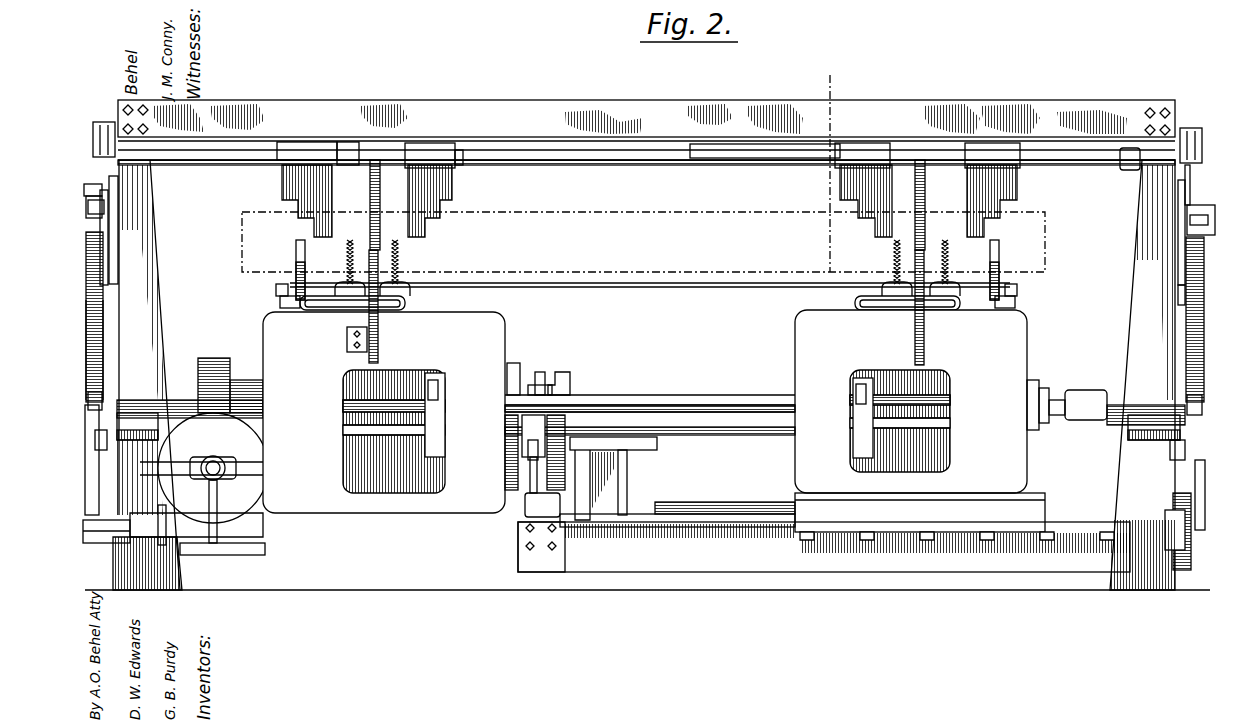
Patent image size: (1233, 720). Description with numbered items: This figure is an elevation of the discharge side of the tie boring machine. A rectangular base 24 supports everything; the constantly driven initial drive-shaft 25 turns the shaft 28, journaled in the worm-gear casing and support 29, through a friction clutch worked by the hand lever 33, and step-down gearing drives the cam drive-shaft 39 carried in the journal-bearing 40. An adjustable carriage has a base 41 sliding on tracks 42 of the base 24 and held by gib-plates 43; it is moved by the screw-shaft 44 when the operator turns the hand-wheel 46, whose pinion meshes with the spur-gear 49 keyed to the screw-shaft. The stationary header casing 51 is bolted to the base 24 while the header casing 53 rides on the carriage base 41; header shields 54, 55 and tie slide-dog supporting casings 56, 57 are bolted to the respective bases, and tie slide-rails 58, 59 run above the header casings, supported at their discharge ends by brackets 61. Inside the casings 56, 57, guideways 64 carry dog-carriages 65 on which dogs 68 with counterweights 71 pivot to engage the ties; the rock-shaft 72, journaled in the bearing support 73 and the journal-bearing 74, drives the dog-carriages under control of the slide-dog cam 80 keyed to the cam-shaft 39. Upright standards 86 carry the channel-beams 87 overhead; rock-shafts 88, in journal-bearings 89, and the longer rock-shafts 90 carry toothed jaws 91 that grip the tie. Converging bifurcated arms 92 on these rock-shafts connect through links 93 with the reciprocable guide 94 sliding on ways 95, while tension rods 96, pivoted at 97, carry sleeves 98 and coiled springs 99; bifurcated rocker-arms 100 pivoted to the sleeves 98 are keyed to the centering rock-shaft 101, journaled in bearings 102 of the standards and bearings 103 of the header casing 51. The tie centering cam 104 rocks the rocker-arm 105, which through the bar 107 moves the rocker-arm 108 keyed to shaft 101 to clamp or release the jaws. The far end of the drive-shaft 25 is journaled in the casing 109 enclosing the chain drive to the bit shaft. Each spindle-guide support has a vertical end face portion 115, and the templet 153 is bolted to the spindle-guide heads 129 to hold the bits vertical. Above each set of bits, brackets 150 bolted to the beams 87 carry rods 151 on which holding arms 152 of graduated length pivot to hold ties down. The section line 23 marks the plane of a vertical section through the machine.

The section line 23— 23 is at (832, 80).
The rectangular base 24 is at (668, 565).
The initial drive-shaft 25 is at (103, 539).
The shaft 28 is at (220, 473).
The worm-gear casing and support 29 is at (221, 552).
The hand lever 33 is at (97, 460).
The cam drive-shaft 39 is at (657, 443).
The journal-bearing 40 is at (625, 465).
The carriage base 41 is at (930, 523).
The tracks 42 is at (737, 545).
The gib-plates 43 is at (930, 569).
The screw-shaft 44 is at (750, 500).
The hand-wheel 46 is at (1189, 515).
The spur-gear 49 is at (1191, 546).
The stationary header casing 51 is at (357, 455).
The header casing 53 is at (938, 448).
The header shield 54 is at (470, 345).
The header shield 55 is at (911, 401).
The tie slide-dog supporting casing 56 is at (384, 412).
The tie slide-dog supporting casing 57 is at (1012, 343).
The tie slide-rail 58 is at (380, 330).
The tie slide-rail 59 is at (924, 345).
The brackets 61 is at (347, 343).
The guideways 64 is at (280, 302).
The dog-carriages 65 is at (278, 292).
The dog 68 is at (296, 258).
The counterweights 71 is at (1044, 385).
The rock-shaft 72 is at (702, 400).
The bearing support 73 is at (1083, 390).
The journal-bearing 74 is at (256, 392).
The slide-dog cam 80 is at (517, 367).
The upright standards 86 is at (164, 287).
The channel-beams 87 is at (646, 118).
The rock-shafts 88 is at (236, 160).
The journal-bearings 89 is at (355, 143).
The rock-shafts 90 is at (788, 158).
The jaws 91 is at (372, 202).
The converging bifurcated arms 92 is at (1205, 123).
The links 93 is at (1200, 177).
The reciprocable guide 94 is at (112, 198).
The ways 95 is at (106, 262).
The tension rods 96 is at (102, 310).
The pivotal connection 97 is at (100, 216).
The sleeves 98 is at (102, 398).
The coiled springs 99 is at (102, 335).
The bifurcated rocker-arms 100 is at (105, 450).
The centering rock-shaft 101 is at (740, 440).
The bearings 102 is at (138, 418).
The bearings 103 is at (445, 430).
The tie centering cam 104 is at (570, 374).
The rocker-arm 105 is at (530, 485).
The bar 107 is at (540, 375).
The rocker-arm 108 is at (535, 431).
The casing 109 is at (522, 525).
The vertical end face portion 115 is at (405, 303).
The heads 129 is at (965, 285).
The brackets 150 is at (303, 142).
The rods 151 is at (463, 162).
The holding arms 152 is at (286, 195).
The templet 153 is at (645, 287).